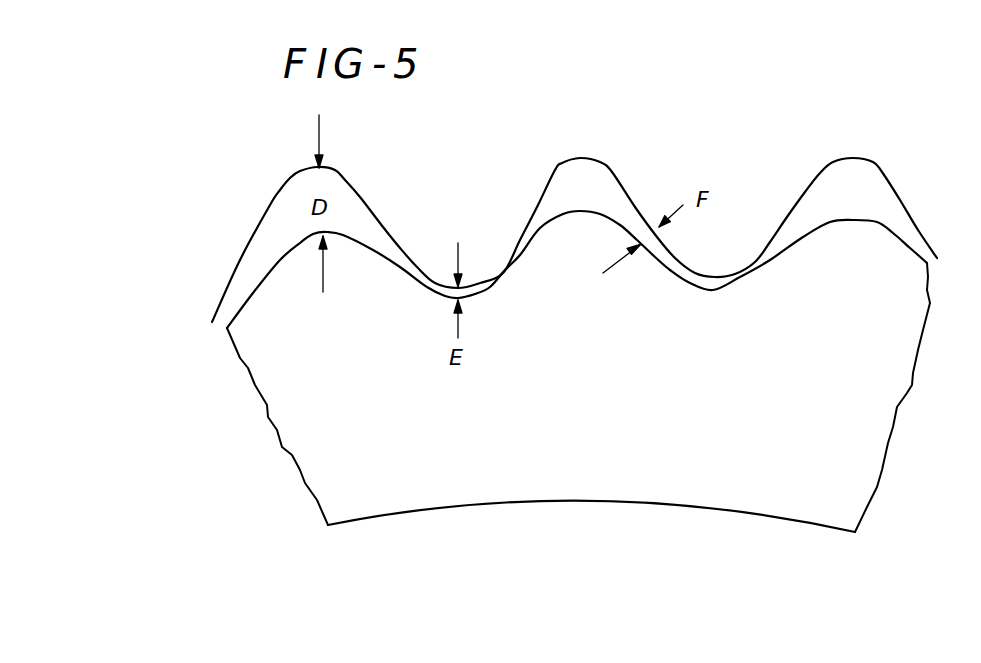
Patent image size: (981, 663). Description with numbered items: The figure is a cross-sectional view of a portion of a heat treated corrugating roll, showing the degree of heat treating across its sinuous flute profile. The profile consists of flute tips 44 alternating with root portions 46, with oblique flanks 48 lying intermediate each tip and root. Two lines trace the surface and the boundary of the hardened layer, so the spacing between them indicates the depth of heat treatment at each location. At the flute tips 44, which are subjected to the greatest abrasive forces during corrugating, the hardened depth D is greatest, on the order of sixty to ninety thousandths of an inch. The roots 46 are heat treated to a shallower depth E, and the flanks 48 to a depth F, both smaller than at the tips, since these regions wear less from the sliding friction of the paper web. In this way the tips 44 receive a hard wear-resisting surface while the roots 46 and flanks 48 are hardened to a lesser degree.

The flute tips 44 is at (587, 158).
The root portions 46 is at (725, 272).
The flanks 48 is at (383, 227).